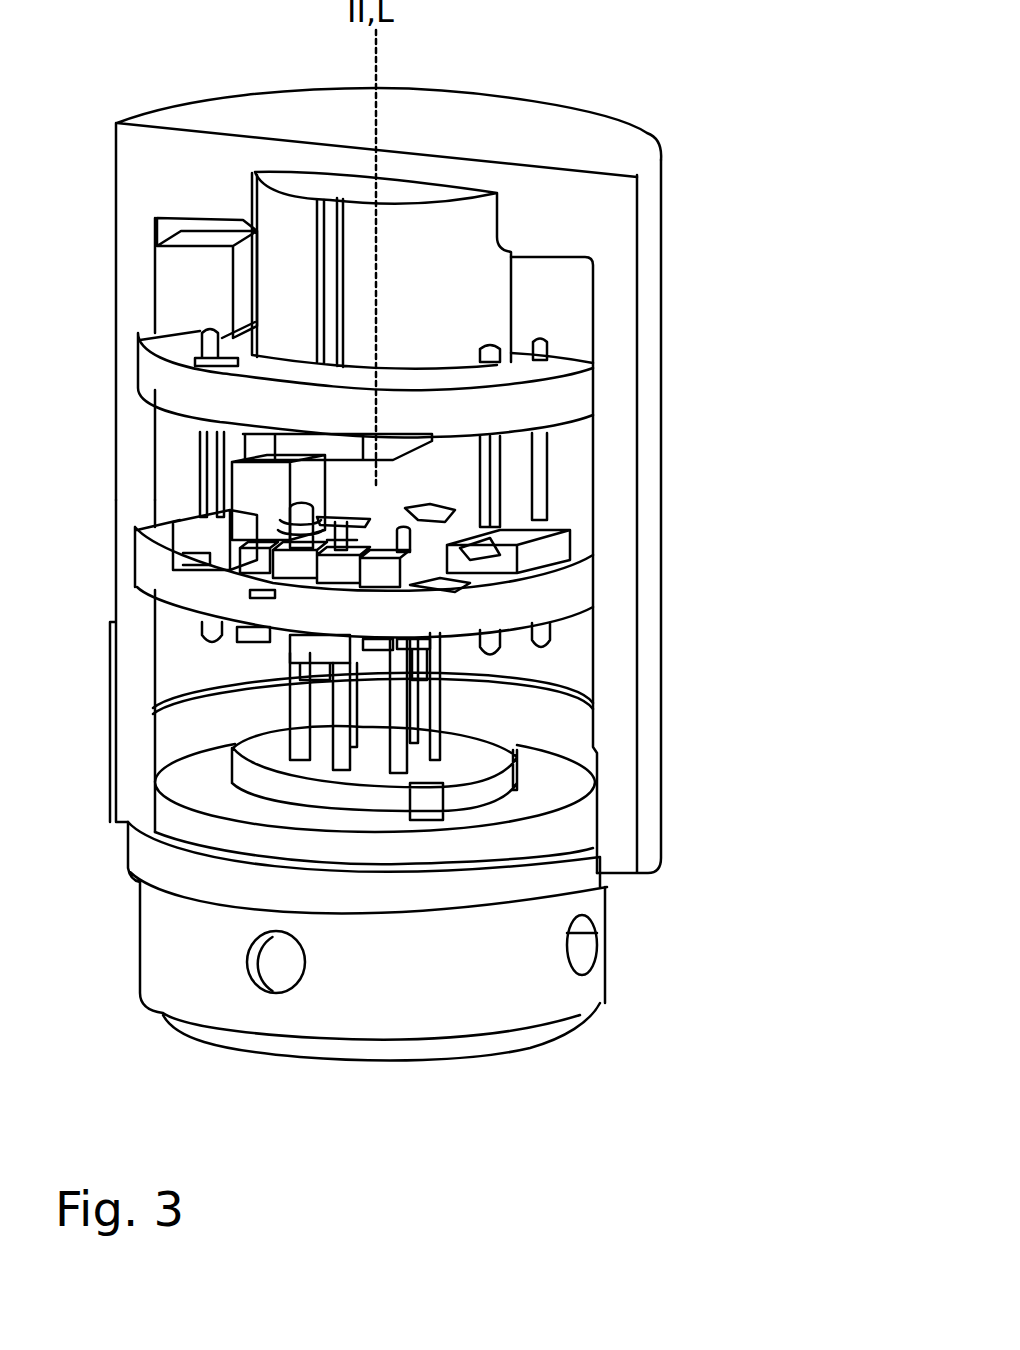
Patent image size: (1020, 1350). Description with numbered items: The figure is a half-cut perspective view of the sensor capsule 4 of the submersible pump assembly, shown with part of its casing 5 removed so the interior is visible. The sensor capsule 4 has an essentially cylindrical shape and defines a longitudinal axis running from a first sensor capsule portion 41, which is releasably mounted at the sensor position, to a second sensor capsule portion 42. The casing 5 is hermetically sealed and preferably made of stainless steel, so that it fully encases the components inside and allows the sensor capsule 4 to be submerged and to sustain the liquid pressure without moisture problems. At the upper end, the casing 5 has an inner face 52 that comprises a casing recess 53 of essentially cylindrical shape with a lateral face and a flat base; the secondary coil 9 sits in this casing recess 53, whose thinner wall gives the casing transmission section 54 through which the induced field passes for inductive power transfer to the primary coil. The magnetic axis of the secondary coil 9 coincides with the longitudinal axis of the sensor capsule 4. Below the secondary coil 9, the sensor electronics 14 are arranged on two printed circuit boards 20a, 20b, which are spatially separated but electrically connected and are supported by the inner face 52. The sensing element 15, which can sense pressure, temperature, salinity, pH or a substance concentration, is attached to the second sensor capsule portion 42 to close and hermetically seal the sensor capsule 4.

The casing transmission section 54 is at (485, 150).
The secondary coil 9 is at (415, 215).
The first sensor capsule portion 41 is at (716, 216).
The casing recess 53 is at (478, 232).
The printed circuit board 20b is at (567, 408).
The inner face 52 is at (585, 503).
The sensor electronics 14 is at (450, 557).
The printed circuit board 20a is at (490, 613).
The second sensor capsule portion 42 is at (745, 736).
The casing 5 is at (632, 792).
The sensor capsule 4 is at (724, 944).
The sensing element 15 is at (578, 990).